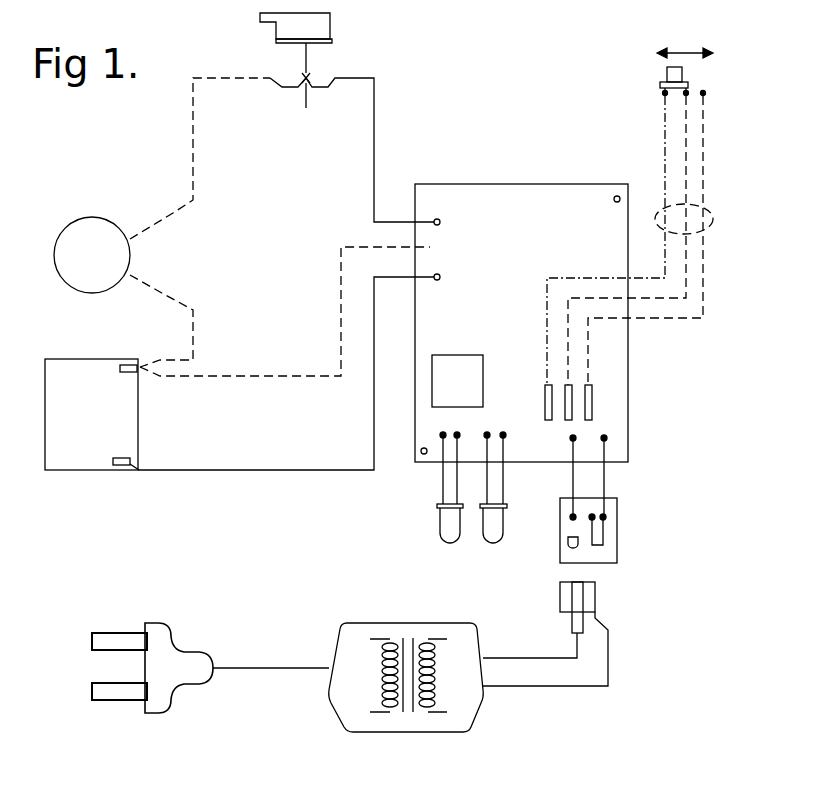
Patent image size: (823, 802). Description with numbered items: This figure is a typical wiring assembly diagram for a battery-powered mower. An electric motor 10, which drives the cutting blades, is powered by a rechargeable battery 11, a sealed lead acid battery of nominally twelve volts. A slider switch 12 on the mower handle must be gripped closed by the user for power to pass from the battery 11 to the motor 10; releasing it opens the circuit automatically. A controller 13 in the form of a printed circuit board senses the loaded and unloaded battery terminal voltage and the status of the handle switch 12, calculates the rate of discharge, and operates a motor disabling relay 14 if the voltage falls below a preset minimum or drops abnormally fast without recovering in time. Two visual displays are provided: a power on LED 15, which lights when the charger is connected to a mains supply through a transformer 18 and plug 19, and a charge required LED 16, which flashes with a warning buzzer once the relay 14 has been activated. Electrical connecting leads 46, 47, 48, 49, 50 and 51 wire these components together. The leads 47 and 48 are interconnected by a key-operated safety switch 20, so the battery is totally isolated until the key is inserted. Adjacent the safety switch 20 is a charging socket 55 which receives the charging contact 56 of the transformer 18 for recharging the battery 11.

The motor 10 is at (107, 260).
The rechargeable battery 11 is at (100, 418).
The slider switch 12 is at (637, 65).
The controller 13 is at (551, 205).
The motor disabling relay 14 is at (483, 380).
The power on LED 15 is at (443, 533).
The charge required LED 16 is at (497, 537).
The transformer 18 is at (333, 713).
The plug 19 is at (162, 650).
The safety switch 20 is at (328, 65).
The electrical connecting lead 46 is at (158, 292).
The electrical connecting lead 47 is at (173, 213).
The electrical connecting lead 48 is at (375, 142).
The electrical connecting lead 49 is at (278, 373).
The electrical connecting lead 50 is at (233, 475).
The electrical connecting lead 51 is at (705, 235).
The charging socket 55 is at (617, 530).
The charging contact 56 is at (593, 598).